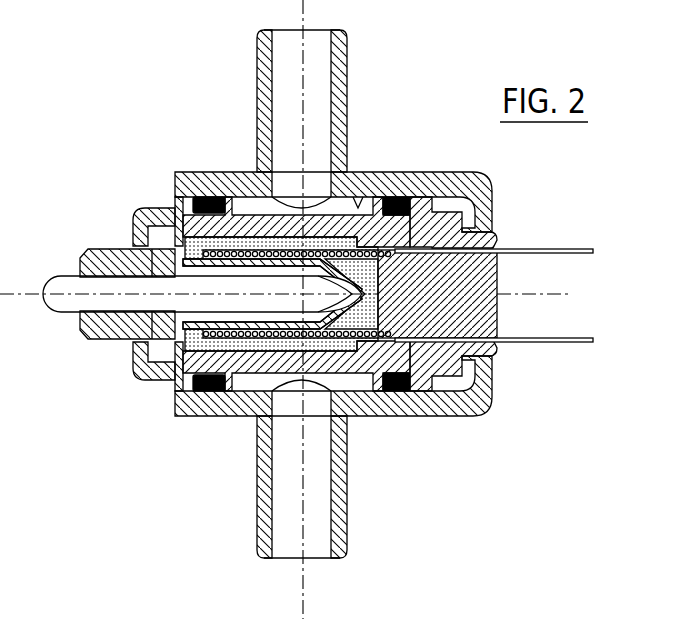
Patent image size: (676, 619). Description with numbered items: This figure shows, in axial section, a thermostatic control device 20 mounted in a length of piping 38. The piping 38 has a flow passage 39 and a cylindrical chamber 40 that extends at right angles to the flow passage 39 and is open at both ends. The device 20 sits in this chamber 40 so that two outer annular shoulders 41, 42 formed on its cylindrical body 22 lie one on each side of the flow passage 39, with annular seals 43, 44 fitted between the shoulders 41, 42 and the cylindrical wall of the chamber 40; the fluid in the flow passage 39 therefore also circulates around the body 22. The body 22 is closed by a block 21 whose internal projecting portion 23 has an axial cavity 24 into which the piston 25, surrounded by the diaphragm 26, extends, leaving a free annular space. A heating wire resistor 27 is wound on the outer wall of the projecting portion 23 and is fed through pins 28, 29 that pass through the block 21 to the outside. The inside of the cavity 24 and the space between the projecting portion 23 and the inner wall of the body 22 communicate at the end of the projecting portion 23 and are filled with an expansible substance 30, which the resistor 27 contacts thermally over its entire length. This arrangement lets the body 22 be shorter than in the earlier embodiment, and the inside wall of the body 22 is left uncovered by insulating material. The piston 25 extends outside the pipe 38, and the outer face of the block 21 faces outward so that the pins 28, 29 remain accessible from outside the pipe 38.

The thermostatic control device 20 is at (303, 309).
The block 21 is at (469, 303).
The cylindrical body 22 is at (322, 223).
The internal projecting portion 23 is at (258, 247).
The axial cavity 24 is at (359, 327).
The piston 25 is at (68, 287).
The diaphragm 26 is at (185, 252).
The heating wire resistor 27 is at (263, 341).
The pin 28 is at (575, 250).
The pin 29 is at (568, 344).
The expansible substance 30 is at (322, 345).
The length of piping 38 is at (265, 492).
The flow passage 39 is at (312, 500).
The cylindrical chamber 40 is at (361, 198).
The outer annular shoulder 41 is at (181, 204).
The outer annular shoulder 42 is at (418, 203).
The annular seal 43 is at (207, 391).
The annular seal 44 is at (400, 391).